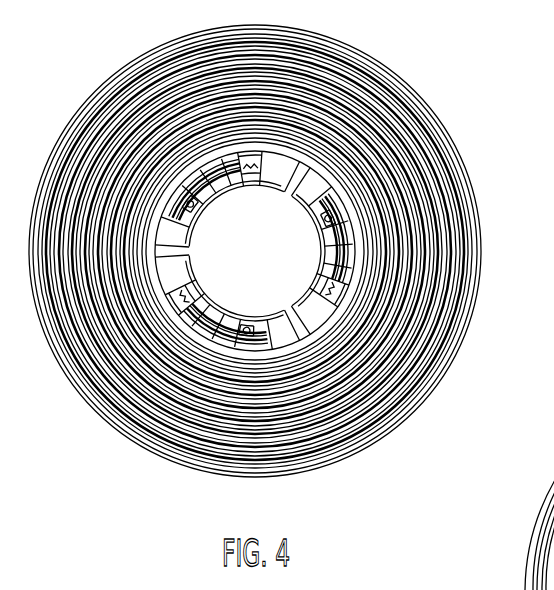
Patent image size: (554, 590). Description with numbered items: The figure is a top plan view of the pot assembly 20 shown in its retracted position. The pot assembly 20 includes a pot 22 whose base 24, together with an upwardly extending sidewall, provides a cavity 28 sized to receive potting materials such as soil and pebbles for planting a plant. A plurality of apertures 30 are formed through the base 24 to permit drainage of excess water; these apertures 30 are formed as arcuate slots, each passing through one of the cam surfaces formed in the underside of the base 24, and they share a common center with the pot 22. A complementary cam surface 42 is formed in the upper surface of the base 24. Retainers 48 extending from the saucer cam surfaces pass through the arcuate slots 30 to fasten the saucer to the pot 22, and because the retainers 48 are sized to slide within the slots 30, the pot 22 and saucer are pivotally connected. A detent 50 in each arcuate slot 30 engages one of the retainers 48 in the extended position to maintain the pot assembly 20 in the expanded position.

The pot assembly 20 is at (447, 110).
The pot 22 is at (464, 178).
The base 24 is at (268, 262).
The cavity 28 is at (351, 97).
The apertures 30 is at (338, 230).
The complementary cam surface 42 is at (286, 330).
The retainers 48 is at (335, 221).
The detent 50 is at (338, 281).